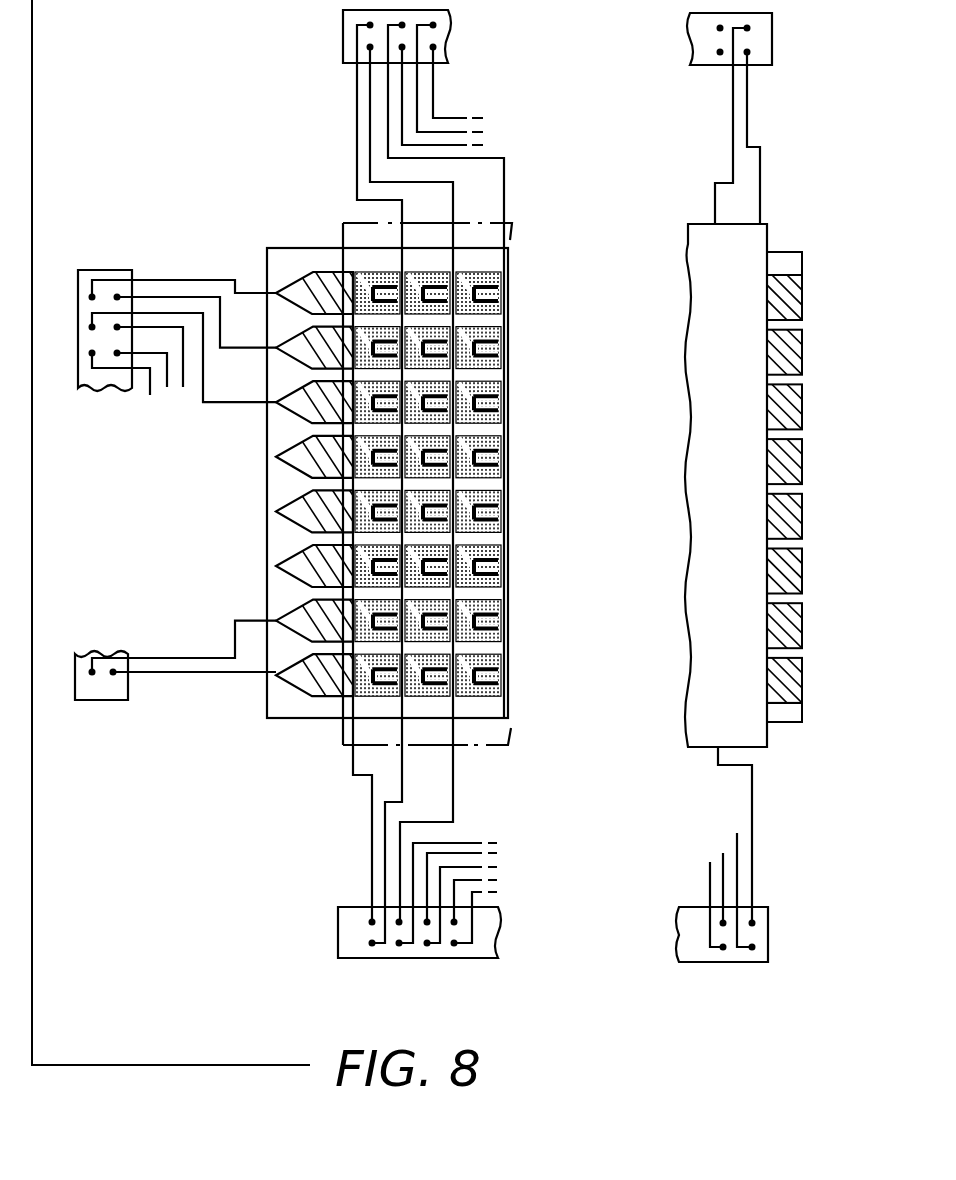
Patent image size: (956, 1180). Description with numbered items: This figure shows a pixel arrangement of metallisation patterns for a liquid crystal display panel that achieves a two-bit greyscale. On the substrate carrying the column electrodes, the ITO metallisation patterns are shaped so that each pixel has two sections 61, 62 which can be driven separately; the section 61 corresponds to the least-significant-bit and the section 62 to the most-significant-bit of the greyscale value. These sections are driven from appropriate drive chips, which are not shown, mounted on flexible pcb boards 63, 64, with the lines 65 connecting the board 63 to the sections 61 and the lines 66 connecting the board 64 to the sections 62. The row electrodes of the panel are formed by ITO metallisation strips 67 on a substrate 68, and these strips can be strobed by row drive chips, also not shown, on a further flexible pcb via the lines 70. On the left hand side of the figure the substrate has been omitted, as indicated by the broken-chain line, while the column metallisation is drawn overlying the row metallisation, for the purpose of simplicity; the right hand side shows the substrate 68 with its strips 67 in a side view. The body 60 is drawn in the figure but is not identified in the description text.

The substrate body 60 is at (752, 239).
The pixel section 61 is at (375, 285).
The pixel section 62 is at (313, 272).
The flexible pcb board 63 is at (343, 36).
The flexible pcb board 64 is at (338, 920).
The lines 65 is at (357, 121).
The lines 66 is at (372, 818).
The ITO metallisation strips 67 is at (783, 304).
The substrate 68 is at (110, 268).
The lines 70 is at (171, 280).